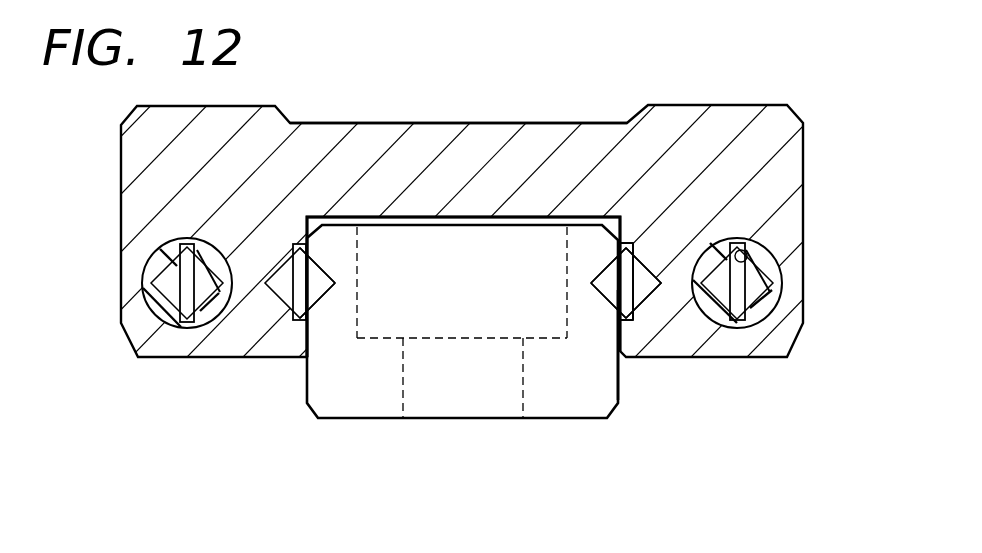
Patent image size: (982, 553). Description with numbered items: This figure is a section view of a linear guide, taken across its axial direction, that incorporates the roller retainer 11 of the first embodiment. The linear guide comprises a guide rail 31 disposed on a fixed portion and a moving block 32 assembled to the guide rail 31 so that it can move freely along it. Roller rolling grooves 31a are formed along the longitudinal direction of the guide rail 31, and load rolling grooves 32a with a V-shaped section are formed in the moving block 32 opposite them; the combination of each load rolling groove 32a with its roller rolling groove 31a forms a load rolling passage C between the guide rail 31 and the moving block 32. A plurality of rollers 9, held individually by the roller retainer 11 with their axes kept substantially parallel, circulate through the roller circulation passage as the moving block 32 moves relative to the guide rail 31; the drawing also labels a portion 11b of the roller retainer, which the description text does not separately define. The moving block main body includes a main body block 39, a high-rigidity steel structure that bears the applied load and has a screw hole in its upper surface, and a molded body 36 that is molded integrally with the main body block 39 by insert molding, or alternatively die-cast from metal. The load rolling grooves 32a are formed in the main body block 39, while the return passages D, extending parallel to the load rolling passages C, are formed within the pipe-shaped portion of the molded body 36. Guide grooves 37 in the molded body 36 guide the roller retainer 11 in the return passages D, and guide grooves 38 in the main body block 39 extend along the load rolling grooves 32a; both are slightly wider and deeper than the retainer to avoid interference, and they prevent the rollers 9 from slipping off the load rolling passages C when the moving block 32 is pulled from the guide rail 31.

The moving block 32 is at (384, 116).
The main body block 39 is at (495, 135).
The load rolling groove 32a is at (630, 317).
The guide rail 31 is at (530, 412).
The roller rolling groove 31a is at (594, 283).
The roller retainer 11 is at (603, 252).
The pin end portion 11b is at (628, 245).
The guide groove 38 is at (633, 252).
The roller 9 is at (653, 260).
The molded body 36 is at (763, 307).
The guide groove 37 is at (746, 257).
The return passage D is at (758, 272).
The load rolling passage C is at (612, 297).